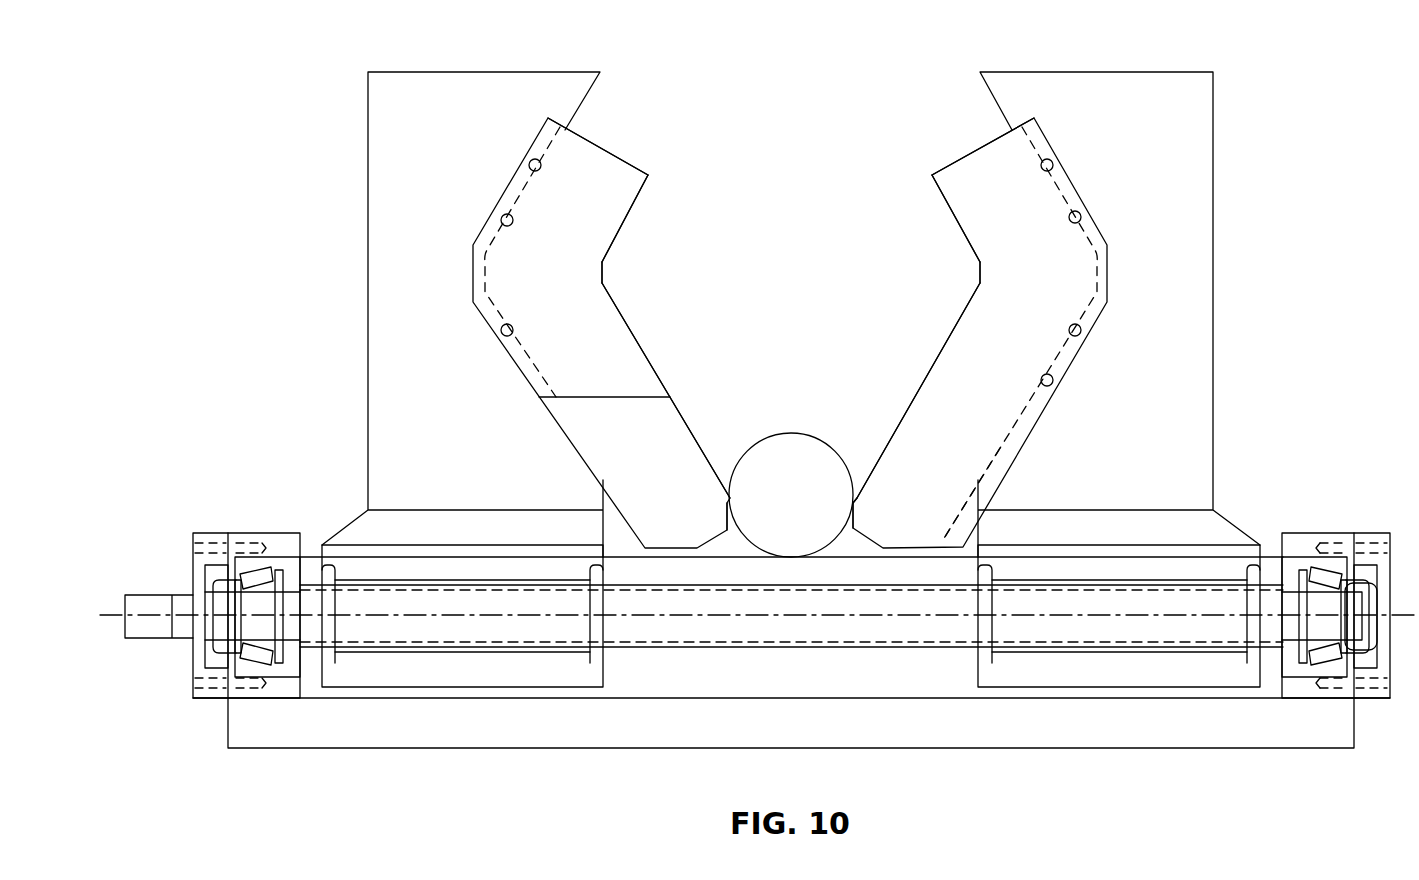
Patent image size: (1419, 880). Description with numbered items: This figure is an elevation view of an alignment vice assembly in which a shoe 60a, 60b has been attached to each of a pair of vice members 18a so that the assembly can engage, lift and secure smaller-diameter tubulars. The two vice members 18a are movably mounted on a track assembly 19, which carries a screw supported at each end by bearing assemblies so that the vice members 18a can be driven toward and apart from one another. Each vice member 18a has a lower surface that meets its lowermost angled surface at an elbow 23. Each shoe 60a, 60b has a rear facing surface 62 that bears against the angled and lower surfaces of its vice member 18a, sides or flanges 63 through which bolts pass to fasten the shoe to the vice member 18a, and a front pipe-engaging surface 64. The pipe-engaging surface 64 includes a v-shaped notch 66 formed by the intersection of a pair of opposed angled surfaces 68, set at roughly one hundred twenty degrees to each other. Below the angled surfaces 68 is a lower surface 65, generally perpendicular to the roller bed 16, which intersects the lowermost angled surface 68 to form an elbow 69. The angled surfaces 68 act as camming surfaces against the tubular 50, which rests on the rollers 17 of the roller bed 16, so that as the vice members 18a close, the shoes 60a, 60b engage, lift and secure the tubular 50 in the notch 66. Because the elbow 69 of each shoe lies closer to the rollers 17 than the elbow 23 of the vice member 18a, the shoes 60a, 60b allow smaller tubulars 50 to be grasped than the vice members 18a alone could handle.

The vice member 18a is at (485, 70).
The shoe 60b is at (603, 166).
The shoe 60a is at (971, 170).
The flanges 63 is at (547, 138).
The pipe-engaging surface 64 is at (634, 206).
The v-shaped notch 66 is at (606, 274).
The angled surfaces 68 is at (625, 246).
The rear facing surface 62 is at (541, 347).
The elbow 23 is at (980, 476).
The tubular 50 is at (793, 434).
The lower surface 65 is at (736, 512).
The elbow 69 is at (858, 504).
The roller bed 16 is at (1217, 553).
The roller 17 is at (833, 568).
The track assembly 19 is at (1333, 712).